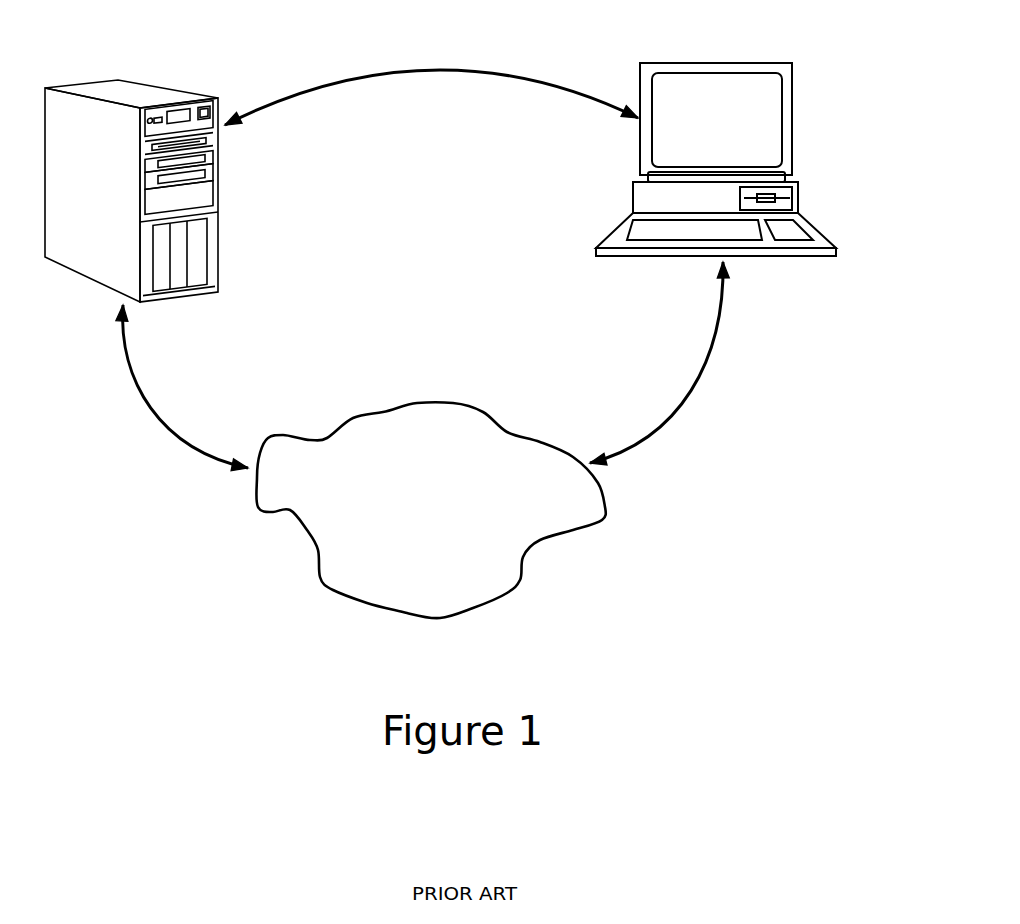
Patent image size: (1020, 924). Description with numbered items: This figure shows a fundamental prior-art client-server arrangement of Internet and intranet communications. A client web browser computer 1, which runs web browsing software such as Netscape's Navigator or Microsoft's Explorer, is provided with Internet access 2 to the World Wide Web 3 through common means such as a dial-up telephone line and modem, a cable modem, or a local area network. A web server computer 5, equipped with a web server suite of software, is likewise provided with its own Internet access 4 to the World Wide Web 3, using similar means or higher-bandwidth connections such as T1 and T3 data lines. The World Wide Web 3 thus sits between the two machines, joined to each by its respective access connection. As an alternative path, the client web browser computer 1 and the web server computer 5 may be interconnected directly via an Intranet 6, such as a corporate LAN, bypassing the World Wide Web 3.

The client web browser computer 1 is at (802, 173).
The Internet access 2 is at (667, 425).
The World Wide Web 3 is at (485, 417).
The Internet access 4 is at (162, 427).
The web server computer 5 is at (220, 213).
The Intranet 6 is at (435, 70).